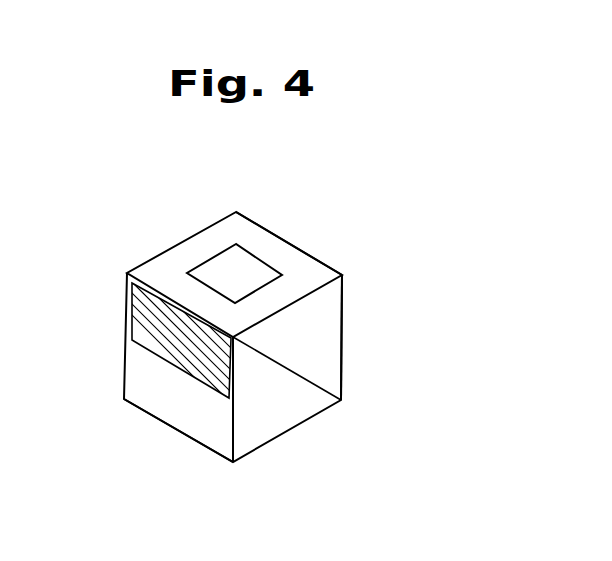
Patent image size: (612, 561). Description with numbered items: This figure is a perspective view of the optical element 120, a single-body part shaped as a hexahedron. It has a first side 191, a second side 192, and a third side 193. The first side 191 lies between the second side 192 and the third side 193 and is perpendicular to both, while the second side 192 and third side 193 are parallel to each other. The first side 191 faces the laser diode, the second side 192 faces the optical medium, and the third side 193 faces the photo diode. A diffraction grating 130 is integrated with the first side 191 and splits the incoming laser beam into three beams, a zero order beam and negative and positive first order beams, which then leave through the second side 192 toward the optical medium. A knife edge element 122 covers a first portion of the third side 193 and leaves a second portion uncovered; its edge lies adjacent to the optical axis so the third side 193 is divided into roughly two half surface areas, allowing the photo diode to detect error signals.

The optical element 120 is at (265, 429).
The knife edge element 122 is at (142, 343).
The diffraction grating 130 is at (220, 262).
The first side 191 is at (303, 260).
The second side 192 is at (343, 310).
The third side 193 is at (203, 420).